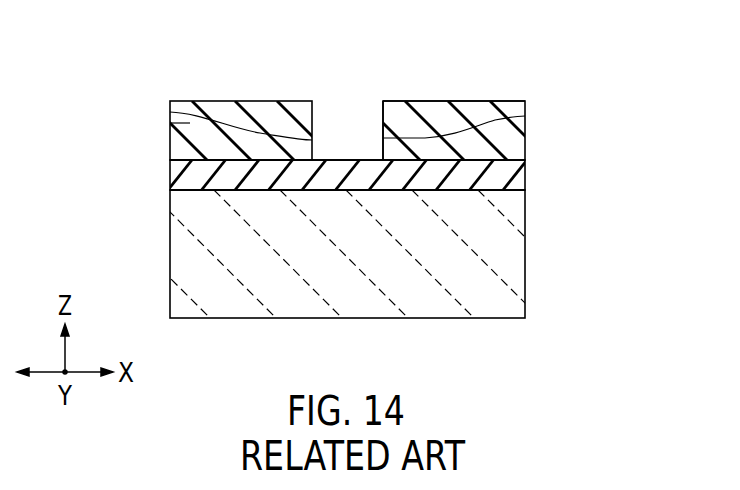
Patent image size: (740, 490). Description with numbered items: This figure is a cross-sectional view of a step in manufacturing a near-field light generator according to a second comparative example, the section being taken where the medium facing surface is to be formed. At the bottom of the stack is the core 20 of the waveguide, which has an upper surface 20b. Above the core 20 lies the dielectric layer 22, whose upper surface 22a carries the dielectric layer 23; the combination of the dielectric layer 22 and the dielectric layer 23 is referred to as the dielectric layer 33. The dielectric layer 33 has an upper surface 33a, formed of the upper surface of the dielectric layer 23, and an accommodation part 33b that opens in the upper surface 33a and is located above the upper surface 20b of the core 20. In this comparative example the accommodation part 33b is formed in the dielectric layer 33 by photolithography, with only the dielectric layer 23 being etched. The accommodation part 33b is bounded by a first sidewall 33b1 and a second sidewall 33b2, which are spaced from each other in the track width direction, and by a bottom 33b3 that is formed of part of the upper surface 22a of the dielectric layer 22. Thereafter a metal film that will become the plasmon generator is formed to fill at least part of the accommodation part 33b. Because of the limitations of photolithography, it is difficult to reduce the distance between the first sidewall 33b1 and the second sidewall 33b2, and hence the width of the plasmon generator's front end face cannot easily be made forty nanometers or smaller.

The core 20 is at (525, 240).
The upper surface of the core 20b is at (185, 190).
The dielectric layer 22 is at (525, 180).
The upper surface of the dielectric layer 22a is at (185, 160).
The dielectric layer 23 is at (525, 152).
The dielectric layer 33 is at (362, 151).
The upper surface of the dielectric layer 33a is at (448, 101).
The accommodation part 33b is at (380, 123).
The first sidewall 33b1 is at (170, 112).
The second sidewall 33b2 is at (525, 116).
The bottom 33b3 is at (348, 160).